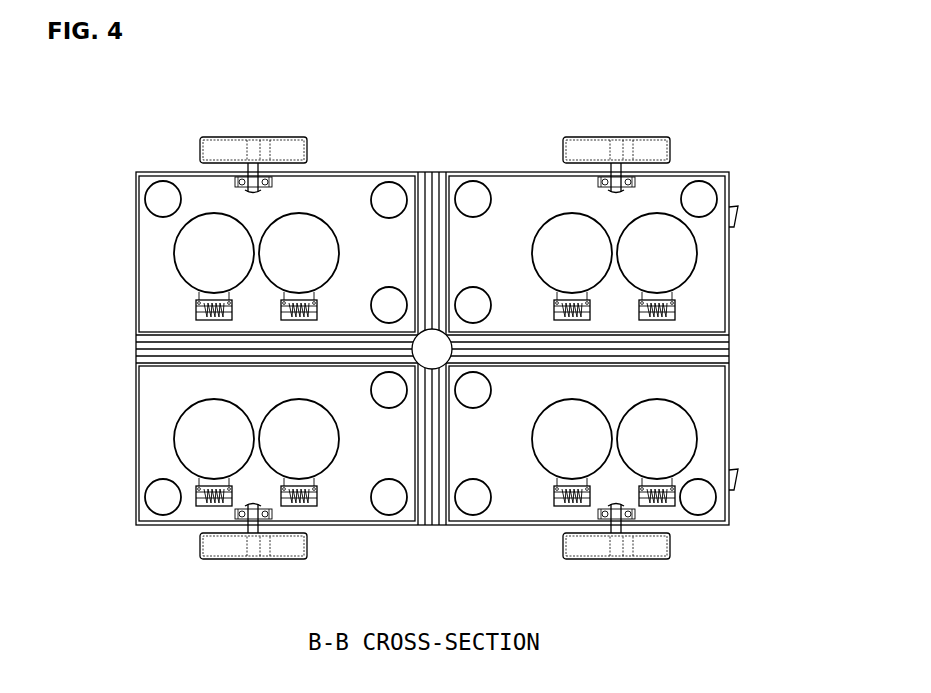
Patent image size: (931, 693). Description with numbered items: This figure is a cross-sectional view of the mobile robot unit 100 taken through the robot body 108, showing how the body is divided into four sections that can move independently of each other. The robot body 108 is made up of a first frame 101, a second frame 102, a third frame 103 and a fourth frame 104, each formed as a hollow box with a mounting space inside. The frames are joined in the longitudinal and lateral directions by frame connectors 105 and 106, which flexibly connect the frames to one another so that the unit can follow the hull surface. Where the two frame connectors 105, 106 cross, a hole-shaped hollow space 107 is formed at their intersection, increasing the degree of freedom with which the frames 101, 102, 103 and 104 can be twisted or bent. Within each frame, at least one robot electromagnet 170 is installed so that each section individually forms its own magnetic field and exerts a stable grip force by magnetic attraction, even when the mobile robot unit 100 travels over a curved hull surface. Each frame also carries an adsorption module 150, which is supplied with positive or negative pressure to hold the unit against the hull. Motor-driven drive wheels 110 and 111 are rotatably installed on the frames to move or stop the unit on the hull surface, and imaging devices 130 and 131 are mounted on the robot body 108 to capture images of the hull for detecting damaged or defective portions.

The mobile robot unit 100 is at (450, 83).
The first frame 101 is at (729, 425).
The second frame 102 is at (729, 263).
The third frame 103 is at (136, 421).
The fourth frame 104 is at (136, 263).
The frame connector 105 is at (730, 346).
The frame connector 106 is at (435, 172).
The hollow space 107 is at (430, 353).
The robot body 108 is at (131, 169).
The drive wheel 110 is at (583, 560).
The drive wheel 111 is at (230, 560).
The imaging device 130 is at (736, 218).
The imaging device 131 is at (738, 482).
The adsorption module 150 is at (165, 181).
The robot electromagnet 170 is at (305, 214).